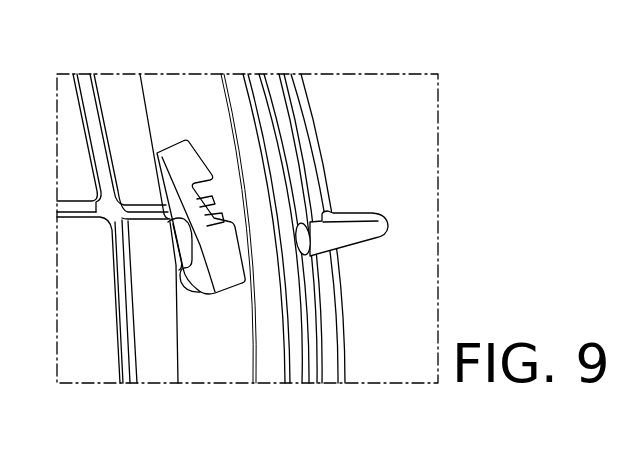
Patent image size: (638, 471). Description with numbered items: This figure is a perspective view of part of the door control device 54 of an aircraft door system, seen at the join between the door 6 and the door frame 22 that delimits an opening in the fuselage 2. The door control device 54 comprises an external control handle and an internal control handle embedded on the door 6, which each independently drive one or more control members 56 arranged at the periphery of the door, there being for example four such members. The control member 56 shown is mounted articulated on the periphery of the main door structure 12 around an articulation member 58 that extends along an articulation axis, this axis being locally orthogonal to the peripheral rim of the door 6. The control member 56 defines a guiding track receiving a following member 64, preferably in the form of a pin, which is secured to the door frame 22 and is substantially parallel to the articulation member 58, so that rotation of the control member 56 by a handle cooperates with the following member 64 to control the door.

The fuselage 2 is at (448, 212).
The door 6 is at (66, 357).
The main door structure 12 is at (108, 372).
The door frame 22 is at (287, 145).
The door control device 54 is at (211, 229).
The control member 56 is at (193, 160).
The articulation member 58 is at (183, 268).
The following member 64 is at (322, 240).